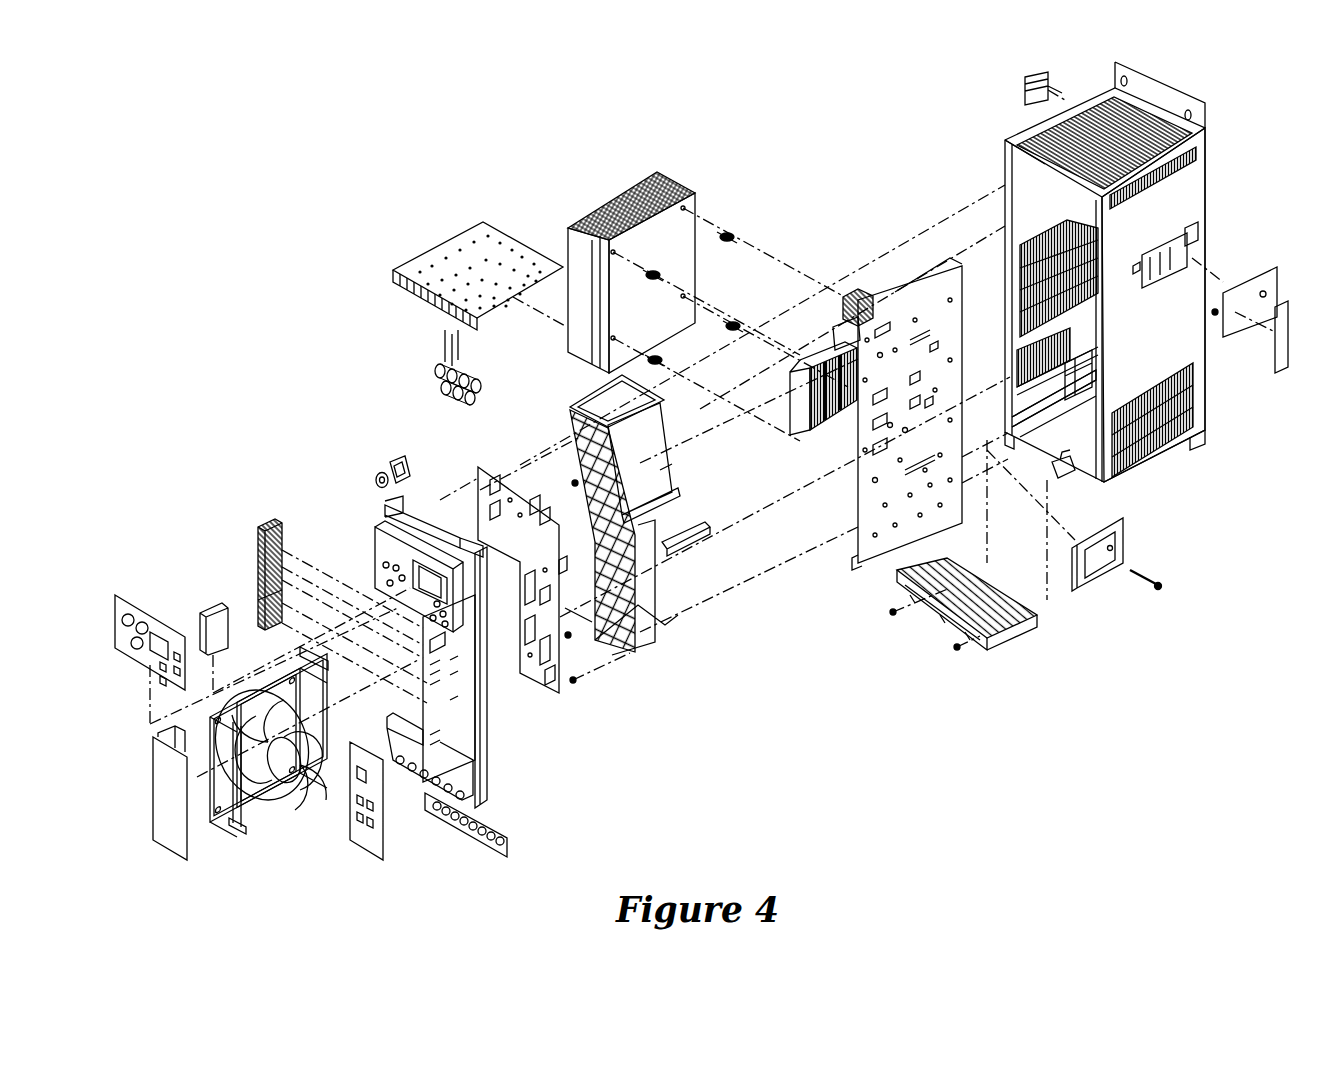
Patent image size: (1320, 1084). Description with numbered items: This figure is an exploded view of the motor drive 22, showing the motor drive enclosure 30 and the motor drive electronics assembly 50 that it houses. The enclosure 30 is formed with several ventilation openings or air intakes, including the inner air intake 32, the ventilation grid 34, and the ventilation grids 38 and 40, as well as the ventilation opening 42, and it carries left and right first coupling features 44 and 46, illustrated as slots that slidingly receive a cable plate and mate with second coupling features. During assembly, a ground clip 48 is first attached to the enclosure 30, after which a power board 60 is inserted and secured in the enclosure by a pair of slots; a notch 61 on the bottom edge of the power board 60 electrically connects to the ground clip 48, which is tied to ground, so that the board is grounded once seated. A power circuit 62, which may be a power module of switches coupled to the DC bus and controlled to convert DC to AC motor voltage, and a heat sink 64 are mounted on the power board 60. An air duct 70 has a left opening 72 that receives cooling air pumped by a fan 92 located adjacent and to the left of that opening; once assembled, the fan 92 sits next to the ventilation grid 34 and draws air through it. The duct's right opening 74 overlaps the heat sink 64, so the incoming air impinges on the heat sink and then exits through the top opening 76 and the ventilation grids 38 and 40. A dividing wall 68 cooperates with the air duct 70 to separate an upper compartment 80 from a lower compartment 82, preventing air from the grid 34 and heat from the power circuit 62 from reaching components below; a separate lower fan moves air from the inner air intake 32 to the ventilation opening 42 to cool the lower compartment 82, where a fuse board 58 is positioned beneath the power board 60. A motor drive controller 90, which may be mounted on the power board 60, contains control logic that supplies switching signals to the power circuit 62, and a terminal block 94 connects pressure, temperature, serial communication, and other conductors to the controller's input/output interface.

The motor drive 22 is at (340, 130).
The motor drive enclosure 30 is at (968, 146).
The inner air intake 32 is at (1018, 365).
The ventilation grid 34 is at (1018, 290).
The ventilation grid 38 is at (1202, 130).
The ventilation grid 40 is at (1207, 160).
The ventilation opening 42 is at (1202, 433).
The left first coupling feature 44 is at (1067, 430).
The right first coupling feature 46 is at (1103, 483).
The ground clip 48 is at (1096, 552).
The motor drive electronics assembly 50 is at (378, 212).
The fuse board 58 is at (487, 238).
The power board 60 is at (895, 287).
The notch 61 is at (908, 574).
The power circuit 62 is at (805, 432).
The heat sink 64 is at (680, 193).
The dividing wall 68 is at (1087, 327).
The air duct 70 is at (578, 448).
The left opening 72 is at (585, 542).
The right opening 74 is at (655, 625).
The top opening 76 is at (600, 392).
The upper compartment 80 is at (1035, 193).
The lower compartment 82 is at (1070, 473).
The motor drive controller 90 is at (560, 683).
The fan 92 is at (298, 795).
The terminal block 94 is at (272, 525).